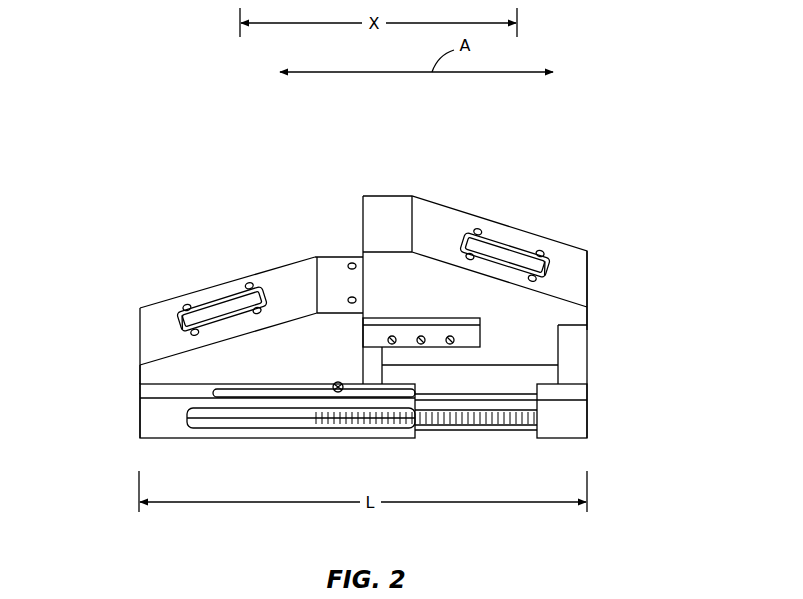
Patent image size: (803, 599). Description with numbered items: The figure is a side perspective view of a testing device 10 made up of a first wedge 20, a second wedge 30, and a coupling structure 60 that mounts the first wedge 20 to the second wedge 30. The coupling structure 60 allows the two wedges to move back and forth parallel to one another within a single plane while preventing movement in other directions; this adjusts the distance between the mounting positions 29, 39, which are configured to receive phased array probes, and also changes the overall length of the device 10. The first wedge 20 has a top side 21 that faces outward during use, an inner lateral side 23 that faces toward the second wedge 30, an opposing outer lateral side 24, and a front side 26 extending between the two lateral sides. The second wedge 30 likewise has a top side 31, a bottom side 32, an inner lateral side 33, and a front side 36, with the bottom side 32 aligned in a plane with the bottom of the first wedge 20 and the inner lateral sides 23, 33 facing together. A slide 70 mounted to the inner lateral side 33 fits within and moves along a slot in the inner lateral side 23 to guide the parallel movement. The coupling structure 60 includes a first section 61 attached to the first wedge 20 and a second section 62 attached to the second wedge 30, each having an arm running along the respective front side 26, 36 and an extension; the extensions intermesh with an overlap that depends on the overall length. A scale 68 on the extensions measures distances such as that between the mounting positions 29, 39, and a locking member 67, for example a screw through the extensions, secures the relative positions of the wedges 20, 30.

The testing device 10 is at (176, 152).
The first wedge 20 is at (157, 313).
The top side 21 is at (287, 278).
The inner lateral side 23 is at (302, 255).
The outer lateral side 24 is at (210, 363).
The front side 26 is at (140, 347).
The mounting position 29 is at (217, 312).
The second wedge 30 is at (584, 247).
The top side 31 is at (435, 215).
The bottom side 32 is at (535, 370).
The inner lateral side 33 is at (527, 315).
The front side 36 is at (590, 275).
The mounting position 39 is at (498, 257).
The coupling structure 60 is at (608, 441).
The first section 61 is at (158, 422).
The second section 62 is at (573, 420).
The locking member 67 is at (336, 391).
The scale 68 is at (433, 415).
The slide 70 is at (405, 333).